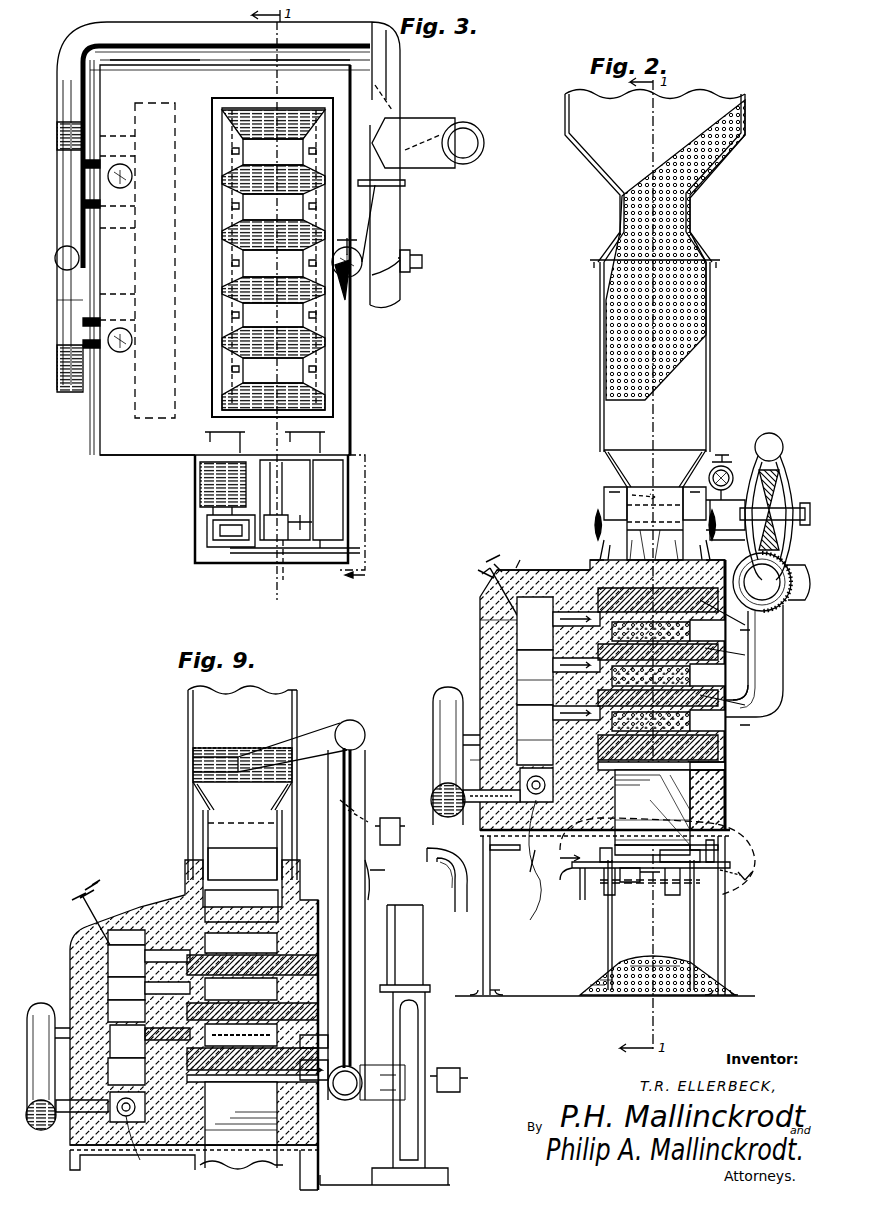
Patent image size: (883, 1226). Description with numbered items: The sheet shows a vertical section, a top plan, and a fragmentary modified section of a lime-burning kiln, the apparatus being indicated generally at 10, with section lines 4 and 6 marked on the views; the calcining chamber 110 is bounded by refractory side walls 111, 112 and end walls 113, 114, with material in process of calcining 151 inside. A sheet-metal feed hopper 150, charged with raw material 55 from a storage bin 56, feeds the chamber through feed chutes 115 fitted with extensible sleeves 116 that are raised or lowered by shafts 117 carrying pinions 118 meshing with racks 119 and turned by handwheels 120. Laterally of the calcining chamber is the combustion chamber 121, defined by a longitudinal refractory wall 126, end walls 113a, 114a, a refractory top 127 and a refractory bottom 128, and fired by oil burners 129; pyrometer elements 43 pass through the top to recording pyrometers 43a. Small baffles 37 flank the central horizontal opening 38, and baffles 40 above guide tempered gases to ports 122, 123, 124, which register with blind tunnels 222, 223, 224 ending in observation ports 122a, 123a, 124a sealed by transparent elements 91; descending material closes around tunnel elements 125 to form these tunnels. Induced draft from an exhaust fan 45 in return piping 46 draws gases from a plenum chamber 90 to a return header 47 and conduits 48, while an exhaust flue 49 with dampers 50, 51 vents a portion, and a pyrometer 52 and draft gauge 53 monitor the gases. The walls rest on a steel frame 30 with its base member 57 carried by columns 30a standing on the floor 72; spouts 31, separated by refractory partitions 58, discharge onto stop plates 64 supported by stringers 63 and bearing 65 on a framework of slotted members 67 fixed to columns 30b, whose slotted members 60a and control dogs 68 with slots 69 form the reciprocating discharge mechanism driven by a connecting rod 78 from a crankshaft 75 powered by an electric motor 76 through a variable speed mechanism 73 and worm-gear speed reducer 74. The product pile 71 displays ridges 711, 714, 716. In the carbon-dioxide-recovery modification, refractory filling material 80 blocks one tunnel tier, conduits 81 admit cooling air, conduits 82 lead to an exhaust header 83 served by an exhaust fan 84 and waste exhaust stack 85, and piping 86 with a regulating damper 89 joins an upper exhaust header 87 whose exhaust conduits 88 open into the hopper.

In FIG. 2, the section line 4 is at (528, 880).
In FIG. 2, the section line 6 is at (755, 867).
In FIG. 9, the heating apparatus 10 is at (456, 1119).
In FIG. 2, the structural steel frame 30 is at (560, 855).
In FIG. 2, the columns 30a is at (490, 950).
In FIG. 2, the columns 30b is at (680, 922).
In FIG. 2, the spouts 31 is at (605, 842).
In FIG. 9, the spouts 31 is at (218, 1160).
In FIG. 2, the small baffles 37 is at (535, 735).
In FIG. 9, the small baffles 37 is at (126, 1071).
In FIG. 2, the horizontal opening 38 is at (474, 766).
In FIG. 2, the baffles 40 is at (535, 673).
In FIG. 9, the baffles 40 is at (126, 1011).
In FIG. 2, the pyrometer elements 43 is at (500, 618).
In FIG. 9, the pyrometer elements 43 is at (70, 938).
In FIG. 3, the recording pyrometers 43a is at (132, 176).
In FIG. 2, the recording pyrometers 43a is at (486, 572).
In FIG. 9, the recording pyrometers 43a is at (102, 888).
In FIG. 3, the exhaust fan 45 is at (384, 248).
In FIG. 2, the exhaust fan 45 is at (780, 480).
In FIG. 9, the exhaust fan 45 is at (388, 818).
In FIG. 3, the return piping 46 is at (42, 152).
In FIG. 2, the return piping 46 is at (772, 672).
In FIG. 9, the return piping 46 is at (440, 720).
In FIG. 3, the return header 47 is at (57, 135).
In FIG. 2, the return header 47 is at (440, 790).
In FIG. 3, the conduits 48 is at (94, 254).
In FIG. 2, the conduits 48 is at (478, 802).
In FIG. 3, the exhaust flue 49 is at (438, 122).
In FIG. 2, the exhaust flue 49 is at (775, 565).
In FIG. 9, the exhaust flue 49 is at (447, 885).
In FIG. 3, the damper 50 is at (400, 92).
In FIG. 3, the damper 51 is at (428, 160).
In FIG. 3, the pyrometer 52 is at (362, 266).
In FIG. 2, the pyrometer 52 is at (722, 455).
In FIG. 3, the draft gauge 53 is at (350, 238).
In FIG. 2, the draft gauge 53 is at (732, 466).
In FIG. 2, the material to be calcined 55 is at (700, 250).
In FIG. 2, the storage bin 56 is at (616, 152).
In FIG. 2, the base ring 57 is at (725, 765).
In FIG. 2, the refractory partitions 58 is at (652, 807).
In FIG. 9, the refractory partitions 58 is at (241, 1113).
In FIG. 2, the slotted longitudinal members 60a is at (590, 905).
In FIG. 2, the stringers 63 is at (615, 872).
In FIG. 2, the stop plates 64 is at (640, 880).
In FIG. 2, the bearing 65 is at (672, 880).
In FIG. 2, the slotted longitudinal members 67 is at (716, 852).
In FIG. 2, the control dogs 68 is at (720, 838).
In FIG. 2, the slots 69 is at (735, 865).
In FIG. 2, the pile 71 is at (645, 995).
In FIG. 2, the floor 72 is at (505, 995).
In FIG. 3, the variable speed mechanism 73 is at (210, 535).
In FIG. 3, the compound worm-gear speed reducer 74 is at (335, 512).
In FIG. 3, the crankshaft 75 is at (280, 565).
In FIG. 3, the electric motor 76 is at (210, 490).
In FIG. 3, the connecting rod 78 is at (268, 480).
In FIG. 9, the refractory filling material 80 is at (150, 1032).
In FIG. 9, the conduits 81 is at (320, 1040).
In FIG. 9, the conduits 82 is at (340, 1100).
In FIG. 9, the exhaust header 83 is at (362, 1100).
In FIG. 9, the exhaust fan 84 is at (415, 1056).
In FIG. 9, the waste exhaust stack 85 is at (423, 945).
In FIG. 9, the piping 86 is at (368, 874).
In FIG. 9, the upper exhaust header 87 is at (366, 735).
In FIG. 9, the exhaust conduits 88 is at (312, 748).
In FIG. 9, the regulating damper 89 is at (368, 812).
In FIG. 2, the plenum chamber 90 is at (604, 492).
In FIG. 2, the transparent elements 91 is at (748, 736).
In FIG. 3, the calcining chamber 110 is at (273, 260).
In FIG. 2, the calcining chamber 110 is at (655, 523).
In FIG. 3, the refractory side wall 111 is at (348, 360).
In FIG. 2, the refractory side wall 111 is at (720, 808).
In FIG. 3, the refractory side wall 112 is at (178, 382).
In FIG. 2, the refractory side wall 112 is at (600, 560).
In FIG. 3, the refractory end wall 113 is at (318, 78).
In FIG. 3, the end wall 113a is at (152, 82).
In FIG. 3, the refractory end wall 114 is at (210, 455).
In FIG. 3, the end wall 114a is at (140, 446).
In FIG. 2, the feed chutes 115 is at (610, 480).
In FIG. 9, the feed chutes 115 is at (210, 815).
In FIG. 2, the extensible sleeves 116 is at (655, 525).
In FIG. 9, the extensible sleeves 116 is at (208, 868).
In FIG. 3, the shafts 117 is at (232, 338).
In FIG. 3, the pinions 118 is at (236, 152).
In FIG. 2, the pinions 118 is at (594, 524).
In FIG. 2, the racks 119 is at (660, 500).
In FIG. 3, the handwheels 120 is at (212, 434).
In FIG. 2, the handwheels 120 is at (666, 547).
In FIG. 2, the combustion chamber 121 is at (520, 620).
In FIG. 2, the ports 122 is at (558, 735).
In FIG. 2, the observation ports 122a is at (707, 720).
In FIG. 2, the ports 123 is at (558, 676).
In FIG. 9, the ports 123 is at (149, 988).
In FIG. 2, the observation ports 123a is at (707, 675).
In FIG. 2, the ports 124 is at (558, 623).
In FIG. 9, the ports 124 is at (149, 961).
In FIG. 2, the observation ports 124a is at (707, 630).
In FIG. 2, the tunnel elements 125 is at (735, 640).
In FIG. 3, the longitudinal refractory wall 126 is at (80, 288).
In FIG. 2, the longitudinal refractory wall 126 is at (490, 650).
In FIG. 3, the refractory top 127 is at (83, 310).
In FIG. 2, the refractory top 127 is at (518, 557).
In FIG. 2, the refractory bottom 128 is at (540, 800).
In FIG. 2, the oil burners 129 is at (524, 840).
In FIG. 9, the oil burners 129 is at (140, 1160).
In FIG. 3, the feed hopper 150 is at (333, 395).
In FIG. 2, the feed hopper 150 is at (712, 368).
In FIG. 9, the feed hopper 150 is at (297, 720).
In FIG. 2, the material in process of calcining 151 is at (770, 700).
In FIG. 2, the gas-conducting tunnels 222 is at (661, 730).
In FIG. 9, the gas-conducting tunnels 222 is at (252, 1007).
In FIG. 2, the gas-conducting tunnels 223 is at (658, 665).
In FIG. 2, the gas-conducting tunnels 224 is at (658, 614).
In FIG. 2, the peak 711 is at (653, 952).
In FIG. 2, the peak 714 is at (608, 962).
In FIG. 2, the peak 716 is at (606, 978).